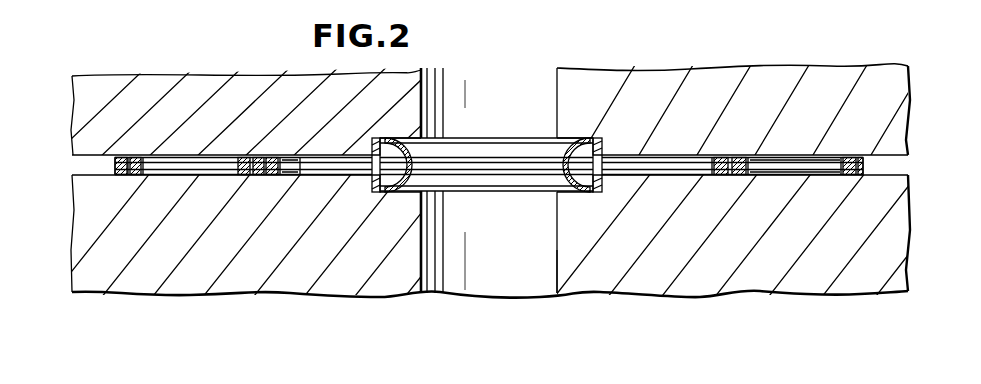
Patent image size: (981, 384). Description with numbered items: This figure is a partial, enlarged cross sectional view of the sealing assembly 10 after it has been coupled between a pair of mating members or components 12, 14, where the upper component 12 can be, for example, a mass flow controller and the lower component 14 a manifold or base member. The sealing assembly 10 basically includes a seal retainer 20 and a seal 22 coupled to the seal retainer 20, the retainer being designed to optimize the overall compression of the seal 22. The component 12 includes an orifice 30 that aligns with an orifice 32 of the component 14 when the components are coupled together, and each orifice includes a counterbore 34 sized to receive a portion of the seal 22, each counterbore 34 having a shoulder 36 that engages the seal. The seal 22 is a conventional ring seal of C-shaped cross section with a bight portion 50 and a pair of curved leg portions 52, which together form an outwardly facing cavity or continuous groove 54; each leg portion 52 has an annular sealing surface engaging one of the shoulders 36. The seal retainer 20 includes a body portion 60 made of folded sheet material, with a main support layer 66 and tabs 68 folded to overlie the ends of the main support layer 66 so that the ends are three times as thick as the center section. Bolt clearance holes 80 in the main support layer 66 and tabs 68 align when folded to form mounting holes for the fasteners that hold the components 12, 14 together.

The sealing assembly 10 is at (86, 165).
The component 12 is at (213, 68).
The component 14 is at (165, 297).
The seal retainer 20 is at (131, 148).
The seal 22 is at (512, 130).
The orifice 30 is at (551, 71).
The orifice 32 is at (557, 275).
The counterbore 34 is at (605, 150).
The shoulder 36 is at (580, 142).
The bight portion 50 is at (413, 157).
The curved leg portion 52 is at (405, 139).
The continuous groove 54 is at (373, 142).
The body portion 60 is at (748, 177).
The main support layer 66 is at (292, 176).
The tab 68 is at (266, 156).
The bolt clearance hole 80 is at (243, 158).